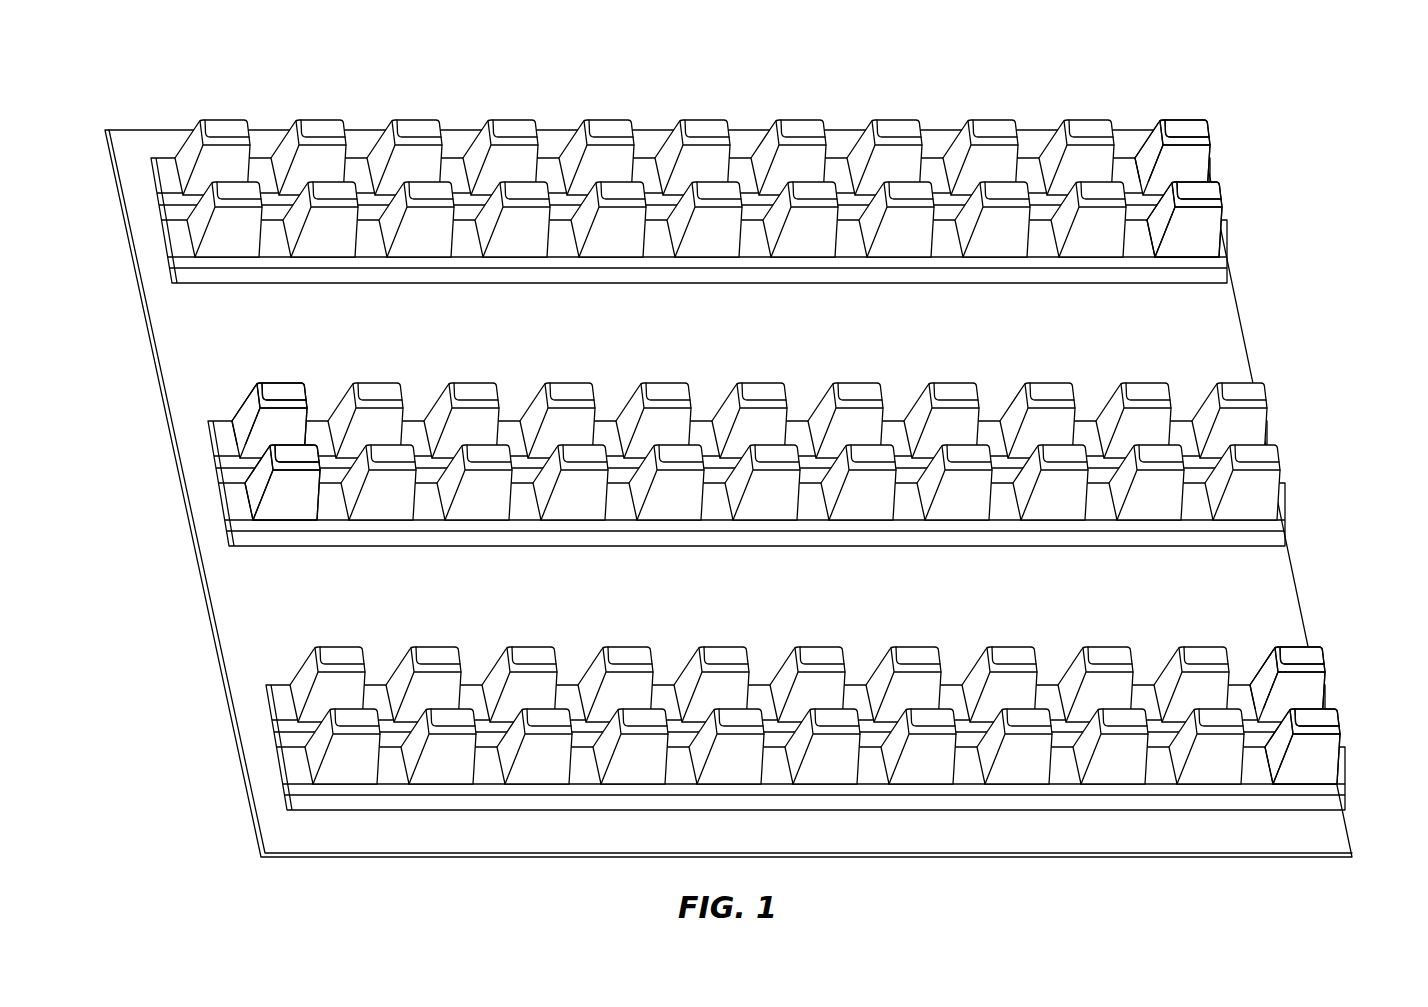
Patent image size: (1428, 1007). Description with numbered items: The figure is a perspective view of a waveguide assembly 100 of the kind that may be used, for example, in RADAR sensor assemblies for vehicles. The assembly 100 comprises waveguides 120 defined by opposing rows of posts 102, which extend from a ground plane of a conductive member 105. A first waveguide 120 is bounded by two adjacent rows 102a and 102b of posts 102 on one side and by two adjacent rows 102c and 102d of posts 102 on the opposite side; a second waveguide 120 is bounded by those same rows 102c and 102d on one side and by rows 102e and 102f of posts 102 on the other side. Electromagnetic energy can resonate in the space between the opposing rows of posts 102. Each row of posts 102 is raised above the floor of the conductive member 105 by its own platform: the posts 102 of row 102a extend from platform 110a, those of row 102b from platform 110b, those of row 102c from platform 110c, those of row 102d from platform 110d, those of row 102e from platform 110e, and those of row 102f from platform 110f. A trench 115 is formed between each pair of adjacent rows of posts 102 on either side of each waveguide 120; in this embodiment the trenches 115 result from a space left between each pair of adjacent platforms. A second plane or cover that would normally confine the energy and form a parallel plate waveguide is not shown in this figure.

The waveguide assembly 100 is at (1314, 120).
The post 102 is at (1192, 152).
The first row of posts 102a is at (133, 191).
The second row of posts 102b is at (146, 254).
The third row of posts 102c is at (1282, 414).
The fourth row of posts 102d is at (1296, 482).
The fifth row of posts 102e is at (249, 727).
The sixth row of posts 102f is at (259, 782).
The conductive member 105 is at (283, 836).
The platform 110a is at (165, 178).
The platform 110b is at (1215, 270).
The platform 110c is at (225, 424).
The platform 110d is at (1278, 532).
The platform 110e is at (284, 690).
The platform 110f is at (1315, 797).
The trench 115 is at (657, 204).
The waveguide 120 is at (1222, 340).